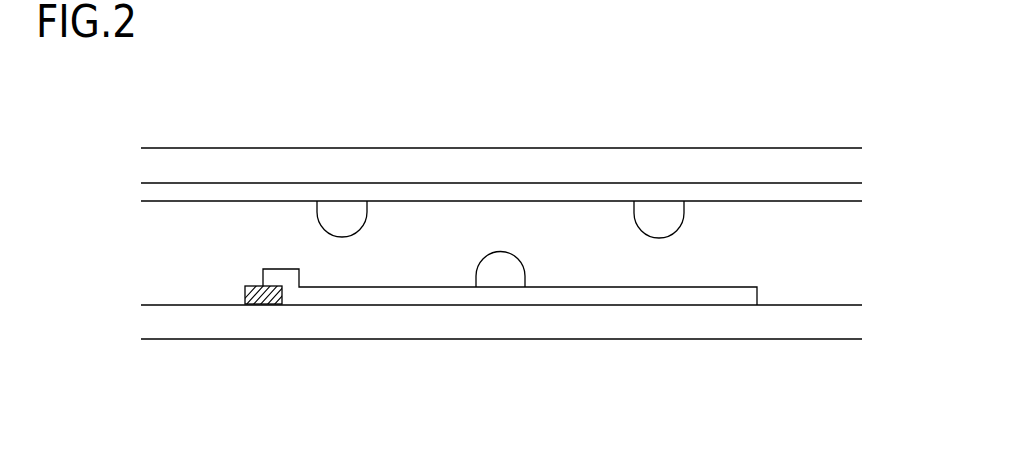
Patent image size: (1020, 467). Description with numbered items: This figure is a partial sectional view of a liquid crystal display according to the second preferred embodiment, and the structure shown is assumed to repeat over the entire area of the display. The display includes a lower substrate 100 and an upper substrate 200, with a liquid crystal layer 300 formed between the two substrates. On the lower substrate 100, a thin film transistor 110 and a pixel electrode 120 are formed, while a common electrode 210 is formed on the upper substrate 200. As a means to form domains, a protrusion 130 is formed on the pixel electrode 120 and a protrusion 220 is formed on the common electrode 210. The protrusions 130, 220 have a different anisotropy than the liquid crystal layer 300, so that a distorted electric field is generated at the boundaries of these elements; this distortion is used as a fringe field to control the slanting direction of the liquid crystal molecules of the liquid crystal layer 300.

The lower substrate 100 is at (367, 322).
The thin film transistor 110 is at (262, 305).
The pixel electrode 120 is at (635, 300).
The protrusion 130 is at (498, 282).
The upper substrate 200 is at (397, 156).
The common electrode 210 is at (500, 193).
The protrusion 220 is at (342, 208).
The liquid crystal layer 300 is at (144, 251).